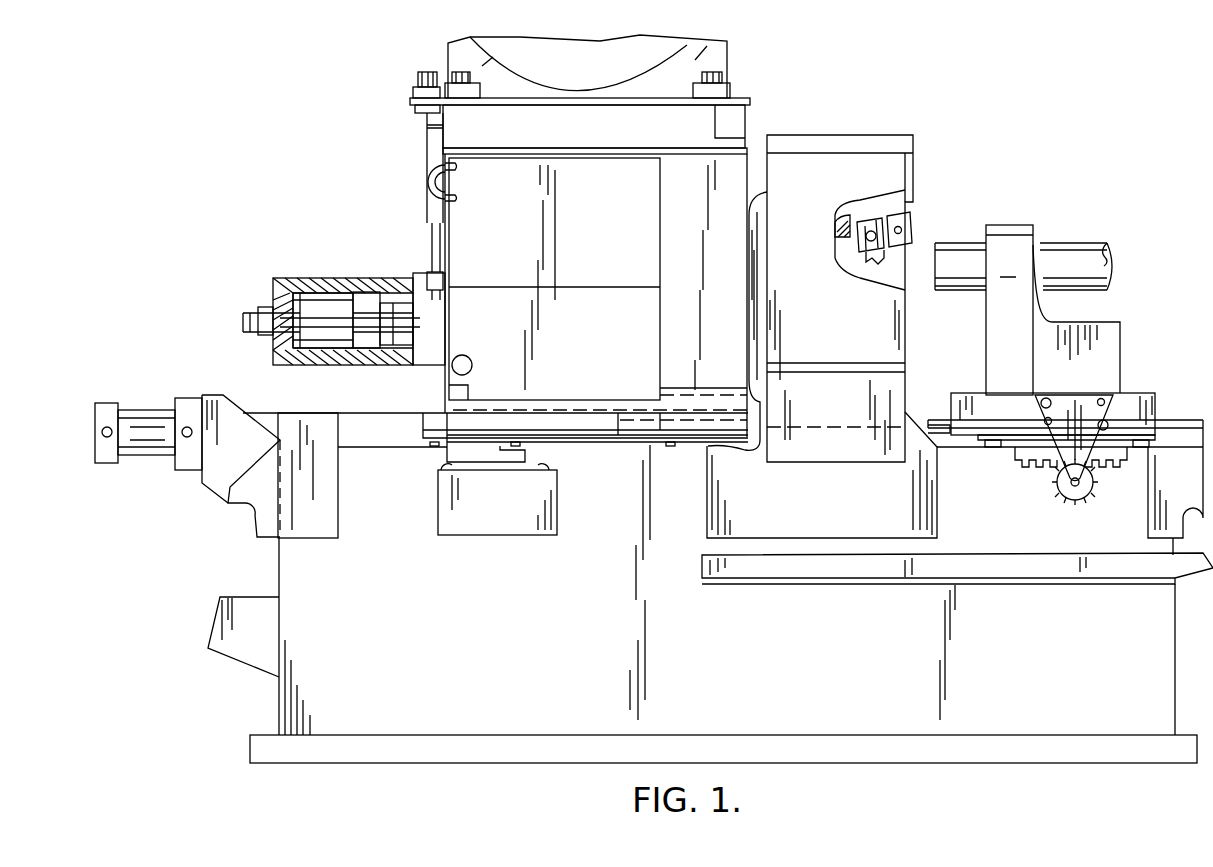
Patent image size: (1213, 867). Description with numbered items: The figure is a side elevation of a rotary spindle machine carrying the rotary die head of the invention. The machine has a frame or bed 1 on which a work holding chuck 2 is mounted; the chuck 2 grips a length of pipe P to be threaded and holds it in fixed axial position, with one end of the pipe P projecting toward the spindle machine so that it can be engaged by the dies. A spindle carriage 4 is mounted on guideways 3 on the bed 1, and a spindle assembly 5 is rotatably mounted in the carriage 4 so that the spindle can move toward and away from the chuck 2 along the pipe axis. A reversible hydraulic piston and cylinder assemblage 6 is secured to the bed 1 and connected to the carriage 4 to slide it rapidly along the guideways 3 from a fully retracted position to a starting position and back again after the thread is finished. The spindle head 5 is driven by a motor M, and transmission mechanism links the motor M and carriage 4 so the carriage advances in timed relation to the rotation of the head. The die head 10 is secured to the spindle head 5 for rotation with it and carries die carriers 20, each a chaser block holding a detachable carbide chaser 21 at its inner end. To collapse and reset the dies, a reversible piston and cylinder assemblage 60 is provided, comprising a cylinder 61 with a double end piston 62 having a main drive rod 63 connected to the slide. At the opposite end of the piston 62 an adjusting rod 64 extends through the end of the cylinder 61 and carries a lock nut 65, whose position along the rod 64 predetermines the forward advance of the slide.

The motor M is at (447, 55).
The frame or bed 1 is at (710, 588).
The work holding chuck 2 is at (1020, 225).
The guideways 3 is at (628, 428).
The spindle carriage 4 is at (580, 254).
The spindle assembly 5 is at (752, 210).
The reversible hydraulic piston and cylinder assemblage 6 is at (156, 400).
The die head 10 is at (924, 186).
The die carriers 20 is at (893, 208).
The carbide chaser 21 is at (879, 262).
The reversible piston and cylinder assemblage 60 is at (319, 314).
The cylinder 61 is at (322, 366).
The double end piston 62 is at (370, 340).
The main drive rod 63 is at (398, 312).
The adjusting rod 64 is at (318, 298).
The lock nut 65 is at (262, 306).
The pipe P is at (1097, 245).